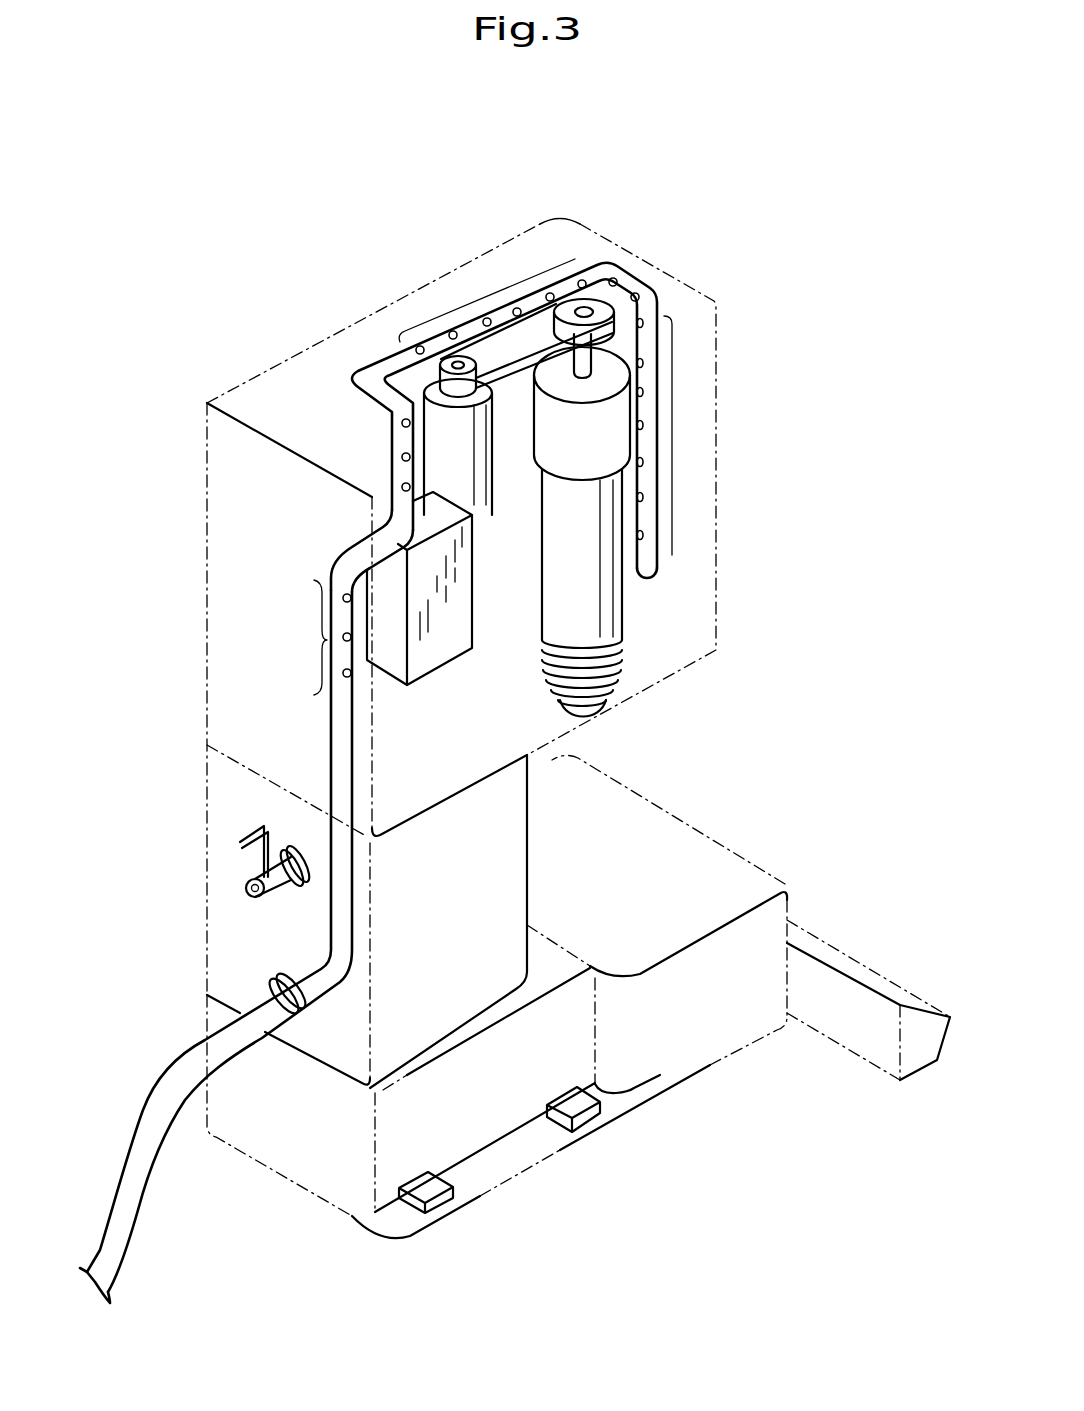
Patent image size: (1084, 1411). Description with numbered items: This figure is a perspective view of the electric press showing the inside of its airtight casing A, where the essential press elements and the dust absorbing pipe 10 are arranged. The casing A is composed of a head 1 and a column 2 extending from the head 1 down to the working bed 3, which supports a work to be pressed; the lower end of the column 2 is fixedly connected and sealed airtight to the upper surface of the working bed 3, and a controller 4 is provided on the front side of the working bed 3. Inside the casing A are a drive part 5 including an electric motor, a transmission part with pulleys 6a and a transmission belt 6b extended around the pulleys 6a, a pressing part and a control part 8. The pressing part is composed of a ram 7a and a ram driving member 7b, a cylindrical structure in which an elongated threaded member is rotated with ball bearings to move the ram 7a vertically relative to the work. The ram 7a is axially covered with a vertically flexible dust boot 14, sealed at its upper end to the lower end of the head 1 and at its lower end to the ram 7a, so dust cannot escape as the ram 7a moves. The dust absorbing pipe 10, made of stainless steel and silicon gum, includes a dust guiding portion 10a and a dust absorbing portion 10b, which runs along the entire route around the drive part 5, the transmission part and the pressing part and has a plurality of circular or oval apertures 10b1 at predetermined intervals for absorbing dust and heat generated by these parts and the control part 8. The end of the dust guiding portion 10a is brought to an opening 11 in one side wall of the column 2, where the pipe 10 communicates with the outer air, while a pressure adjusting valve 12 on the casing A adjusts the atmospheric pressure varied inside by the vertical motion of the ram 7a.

The airtight casing A is at (557, 210).
The head 1 is at (605, 240).
The column 2 is at (523, 880).
The working bed 3 is at (660, 837).
The controller 4 is at (862, 958).
The drive part 5 is at (438, 443).
The pulleys 6a is at (378, 366).
The transmission belt 6b is at (504, 376).
The ram 7a is at (590, 718).
The ram driving member 7b is at (607, 610).
The control part 8 is at (443, 653).
The dust absorbing pipe 10 is at (332, 742).
The dust guiding portion 10a is at (350, 553).
The dust absorbing portion 10b is at (487, 294).
The apertures 10b1 is at (549, 296).
The opening 11 is at (296, 1012).
The pressure adjusting valve 12 is at (250, 870).
The dust boot 14 is at (625, 665).